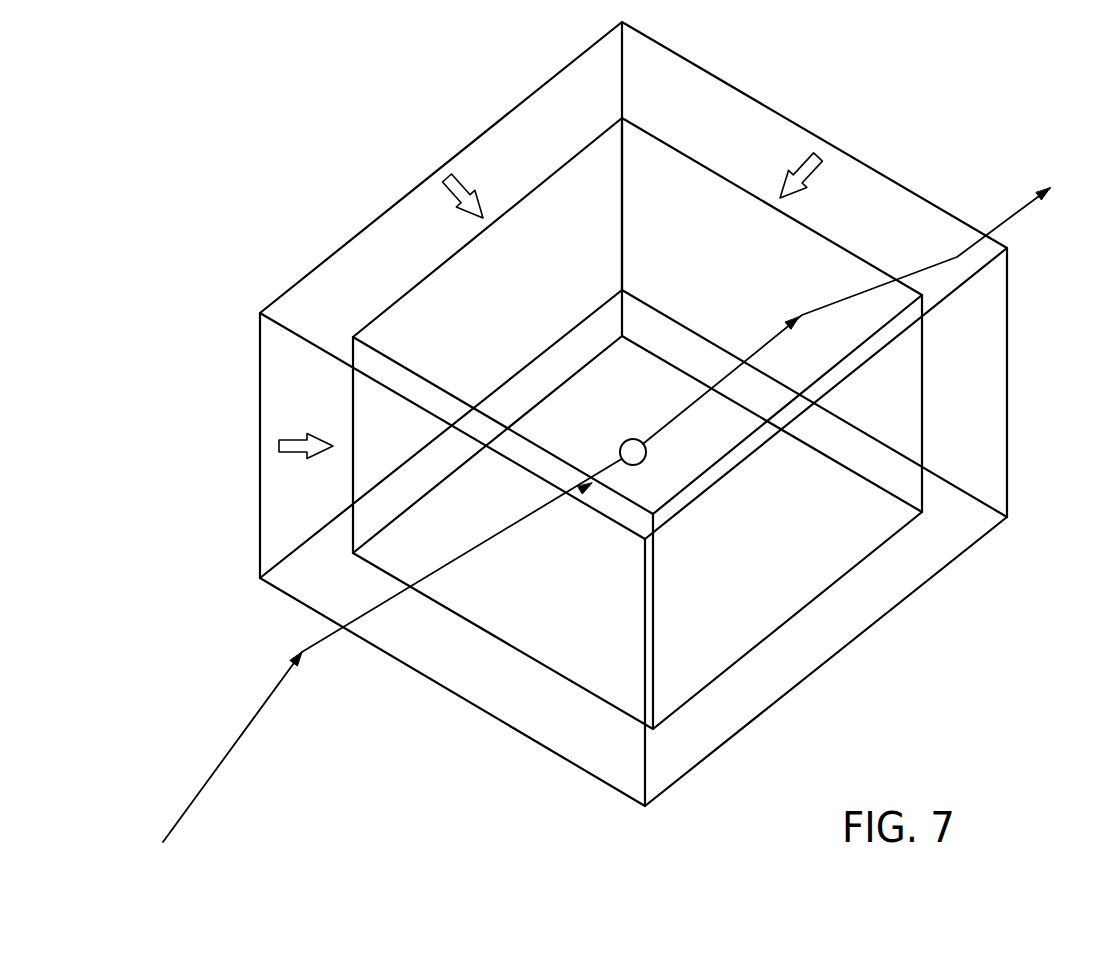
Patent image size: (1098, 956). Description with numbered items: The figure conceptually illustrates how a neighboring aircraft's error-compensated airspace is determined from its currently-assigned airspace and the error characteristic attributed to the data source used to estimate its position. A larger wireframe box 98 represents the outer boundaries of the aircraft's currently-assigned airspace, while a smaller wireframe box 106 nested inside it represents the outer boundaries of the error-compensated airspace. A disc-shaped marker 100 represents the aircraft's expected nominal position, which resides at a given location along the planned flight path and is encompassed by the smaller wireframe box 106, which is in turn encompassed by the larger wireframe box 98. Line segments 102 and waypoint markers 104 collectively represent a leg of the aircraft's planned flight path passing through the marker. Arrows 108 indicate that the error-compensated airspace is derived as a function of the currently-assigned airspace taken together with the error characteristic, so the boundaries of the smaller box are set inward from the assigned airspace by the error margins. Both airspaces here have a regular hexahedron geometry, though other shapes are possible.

The larger wireframe box 98 is at (982, 396).
The disc-shaped marker 100 is at (622, 443).
The line segments 102 is at (1015, 215).
The waypoint markers 104 is at (1049, 198).
The smaller wireframe box 106 is at (778, 564).
The arrows 108 is at (470, 182).